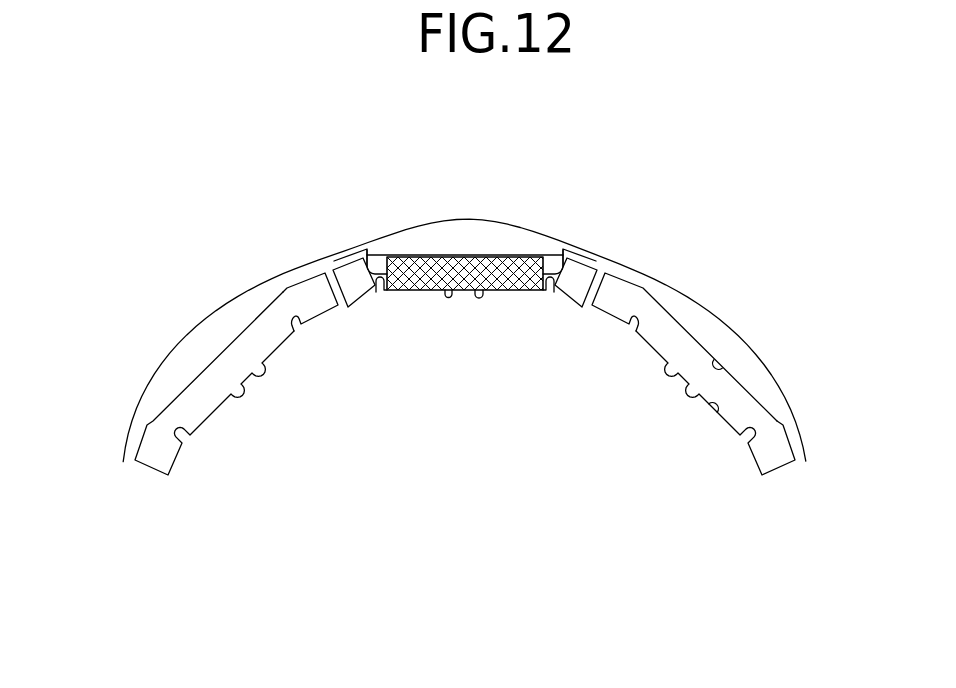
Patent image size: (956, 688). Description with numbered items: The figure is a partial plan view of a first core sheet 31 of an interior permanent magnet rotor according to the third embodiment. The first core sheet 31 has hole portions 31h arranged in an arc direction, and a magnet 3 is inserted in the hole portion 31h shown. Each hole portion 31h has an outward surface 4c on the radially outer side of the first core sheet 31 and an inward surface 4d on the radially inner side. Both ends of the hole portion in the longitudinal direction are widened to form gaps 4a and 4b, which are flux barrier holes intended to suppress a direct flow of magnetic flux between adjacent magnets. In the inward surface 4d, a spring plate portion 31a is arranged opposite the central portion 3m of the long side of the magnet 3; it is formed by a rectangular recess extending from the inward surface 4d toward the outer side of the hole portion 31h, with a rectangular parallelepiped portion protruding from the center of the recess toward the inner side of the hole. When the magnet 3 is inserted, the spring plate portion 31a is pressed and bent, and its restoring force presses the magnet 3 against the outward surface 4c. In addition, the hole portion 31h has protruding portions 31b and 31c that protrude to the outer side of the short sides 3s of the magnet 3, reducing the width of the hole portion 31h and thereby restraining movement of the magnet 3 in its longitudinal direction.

The first core sheet 31 is at (104, 154).
The magnet 3 is at (458, 266).
The central portion of the long side of the magnet 3m is at (472, 270).
The short sides of the magnet 3s is at (366, 252).
The hole portion 31h is at (578, 268).
The spring plate portion 31a is at (470, 293).
The protruding portion 31b is at (380, 284).
The protruding portion 31c is at (548, 284).
The gap 4a is at (153, 450).
The gap 4b is at (312, 296).
The outward surface 4c is at (723, 380).
The inward surface 4d is at (718, 412).